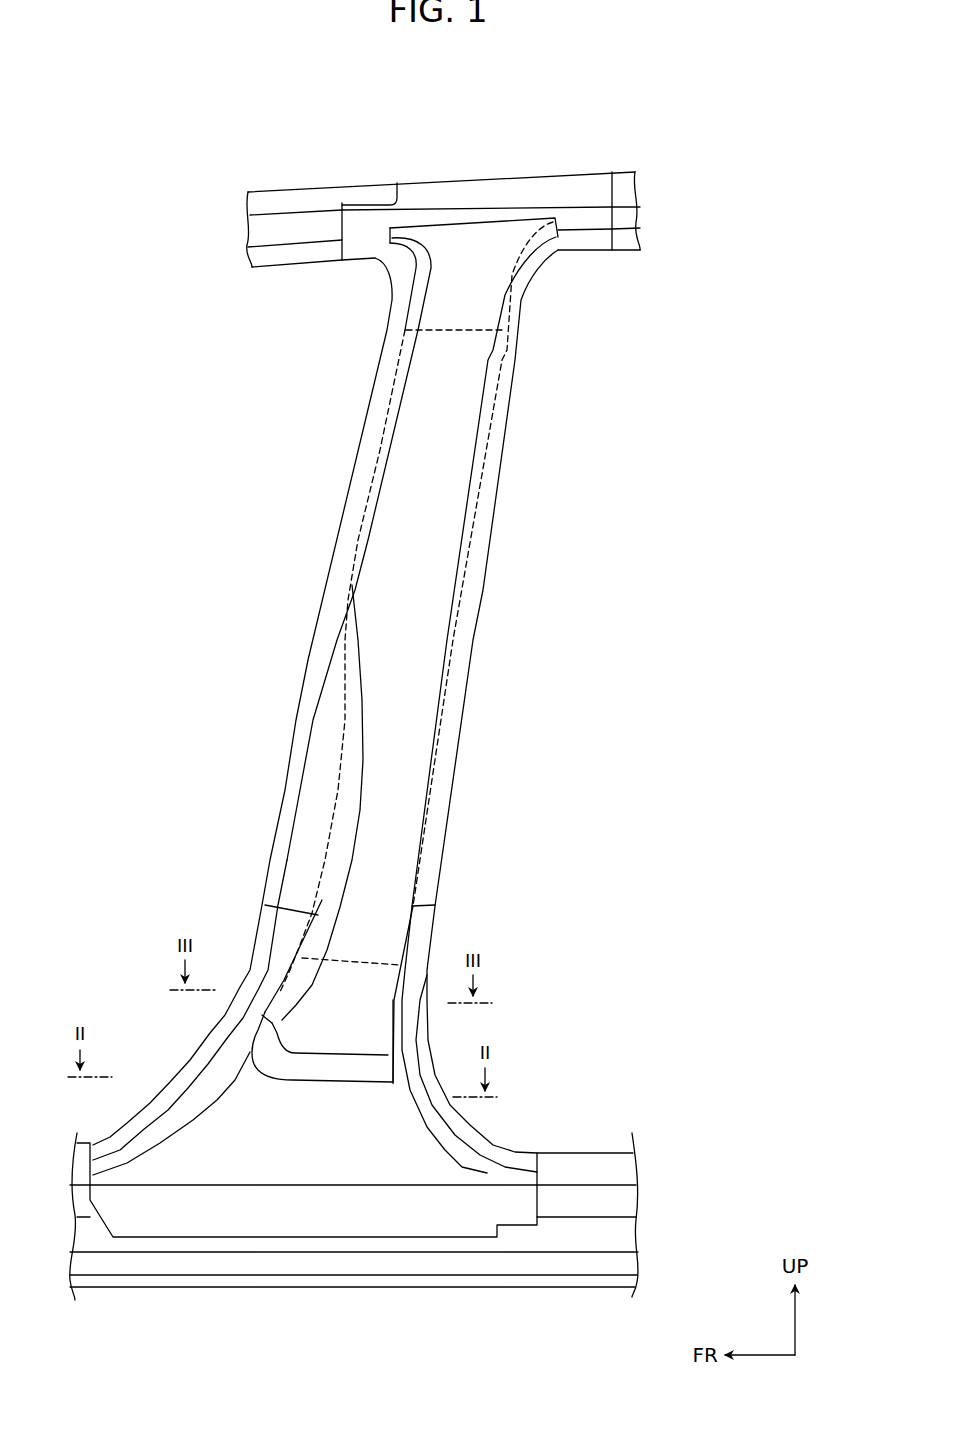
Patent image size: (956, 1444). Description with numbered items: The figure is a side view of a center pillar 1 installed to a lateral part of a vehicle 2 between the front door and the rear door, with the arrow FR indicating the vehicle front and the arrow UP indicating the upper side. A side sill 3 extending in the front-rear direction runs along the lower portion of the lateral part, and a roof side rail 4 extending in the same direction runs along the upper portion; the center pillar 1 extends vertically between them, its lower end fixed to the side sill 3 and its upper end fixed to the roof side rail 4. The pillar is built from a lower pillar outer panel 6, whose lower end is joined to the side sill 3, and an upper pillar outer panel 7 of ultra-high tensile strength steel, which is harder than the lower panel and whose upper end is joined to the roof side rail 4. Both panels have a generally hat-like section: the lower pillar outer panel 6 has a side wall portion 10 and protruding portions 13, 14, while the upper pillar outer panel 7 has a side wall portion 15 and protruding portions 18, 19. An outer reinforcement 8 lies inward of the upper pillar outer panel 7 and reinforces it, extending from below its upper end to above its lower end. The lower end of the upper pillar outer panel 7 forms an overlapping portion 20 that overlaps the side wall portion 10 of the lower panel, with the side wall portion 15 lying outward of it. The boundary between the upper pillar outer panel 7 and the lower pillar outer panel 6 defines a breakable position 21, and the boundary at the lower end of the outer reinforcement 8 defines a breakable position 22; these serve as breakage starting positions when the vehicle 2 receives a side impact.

The center pillar 1 is at (305, 522).
The vehicle 2 is at (133, 122).
The side sill 3 is at (555, 1263).
The roof side rail 4 is at (288, 200).
The lower pillar outer panel 6 is at (166, 1079).
The upper pillar outer panel 7 is at (495, 562).
The outer reinforcement 8 is at (415, 652).
The side wall portion 10 is at (287, 1170).
The protruding portion 13 is at (266, 925).
The protruding portion 14 is at (423, 928).
The side wall portion 15 is at (457, 395).
The protruding portion 18 is at (377, 393).
The protruding portion 19 is at (492, 461).
The overlapping portion 20 is at (327, 1023).
The breakable position 21 is at (357, 1078).
The breakable position 22 is at (357, 955).